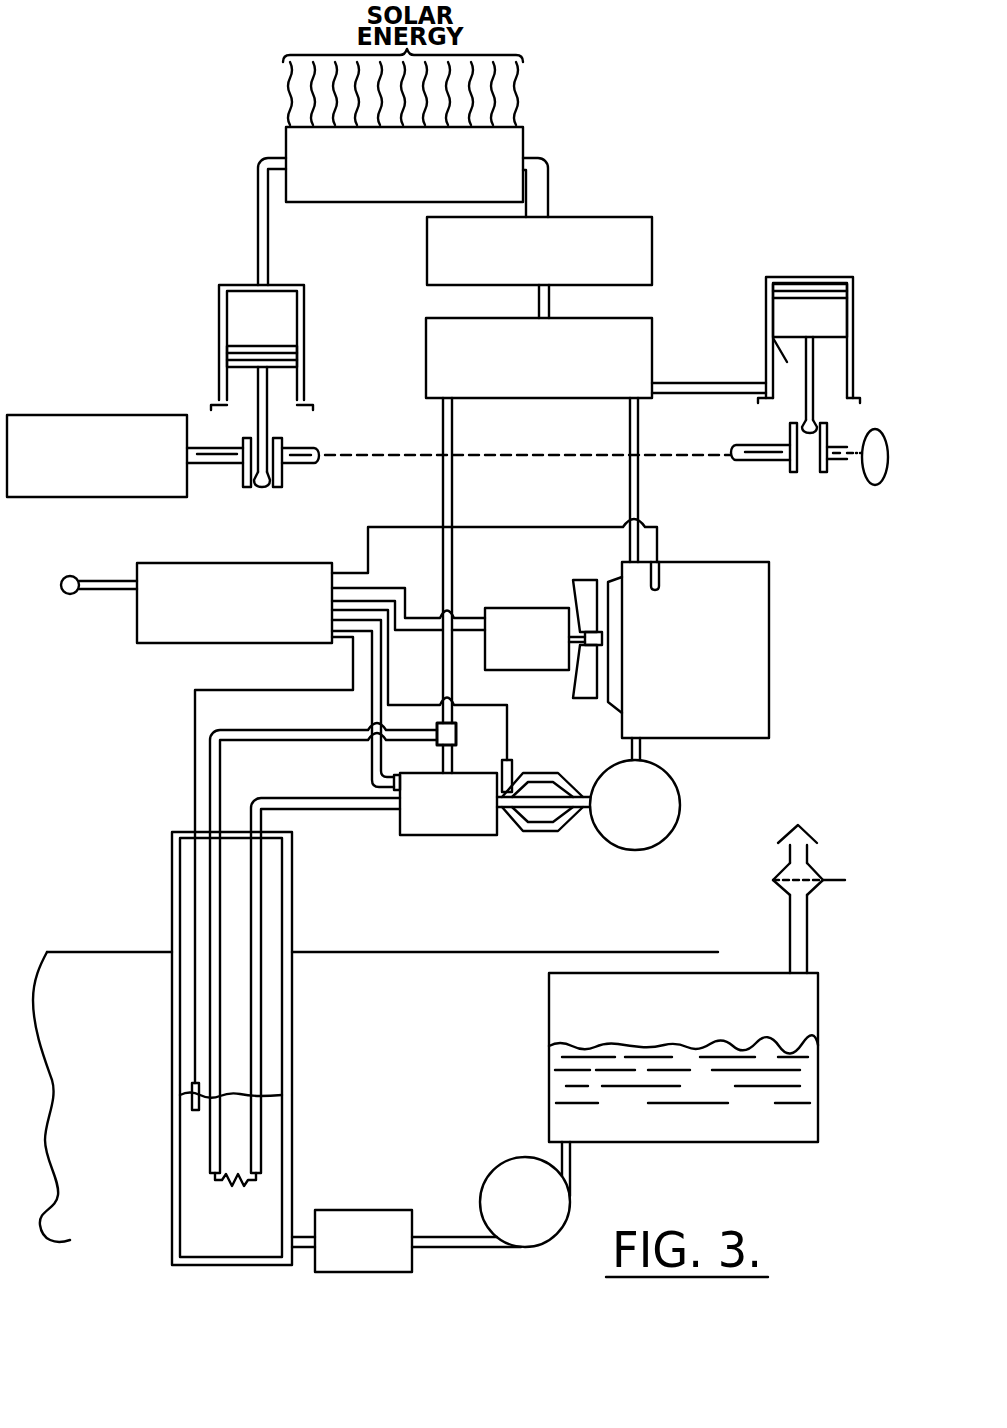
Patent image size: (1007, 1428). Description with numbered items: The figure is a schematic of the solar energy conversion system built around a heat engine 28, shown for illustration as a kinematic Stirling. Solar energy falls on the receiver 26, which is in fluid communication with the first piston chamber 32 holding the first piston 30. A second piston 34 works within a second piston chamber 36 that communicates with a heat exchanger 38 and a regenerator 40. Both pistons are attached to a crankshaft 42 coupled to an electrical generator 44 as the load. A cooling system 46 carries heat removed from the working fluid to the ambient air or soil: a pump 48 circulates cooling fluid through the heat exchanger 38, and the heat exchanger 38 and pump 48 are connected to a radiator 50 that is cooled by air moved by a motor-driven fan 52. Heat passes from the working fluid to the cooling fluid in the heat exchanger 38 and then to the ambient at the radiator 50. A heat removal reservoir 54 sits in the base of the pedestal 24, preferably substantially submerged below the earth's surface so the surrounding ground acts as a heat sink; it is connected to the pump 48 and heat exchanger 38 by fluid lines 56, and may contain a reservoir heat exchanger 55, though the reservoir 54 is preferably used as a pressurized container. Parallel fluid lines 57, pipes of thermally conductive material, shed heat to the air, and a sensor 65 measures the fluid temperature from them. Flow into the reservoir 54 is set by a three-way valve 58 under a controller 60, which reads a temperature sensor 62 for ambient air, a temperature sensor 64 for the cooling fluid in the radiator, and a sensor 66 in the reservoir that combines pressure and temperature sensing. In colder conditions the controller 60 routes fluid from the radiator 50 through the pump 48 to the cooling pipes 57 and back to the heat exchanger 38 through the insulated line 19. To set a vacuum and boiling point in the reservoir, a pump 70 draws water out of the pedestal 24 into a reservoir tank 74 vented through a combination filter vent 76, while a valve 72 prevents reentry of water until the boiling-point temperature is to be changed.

The line 19 is at (452, 475).
The pedestal 24 is at (292, 932).
The receiver 26 is at (391, 189).
The heat engine 28 is at (616, 189).
The first piston 30 is at (239, 380).
The first piston chamber 32 is at (248, 334).
The second piston 34 is at (799, 312).
The second piston chamber 36 is at (787, 362).
The heat exchanger 38 is at (526, 393).
The regenerator 40 is at (526, 278).
The crankshaft 42 is at (304, 467).
The electrical generator 44 is at (83, 484).
The cooling system 46 is at (559, 588).
The pump 48 is at (621, 833).
The radiator 50 is at (681, 678).
The motor-driven fan 52 is at (513, 661).
The heat removal reservoir 54 is at (223, 1248).
The reservoir heat exchanger 55 is at (250, 1192).
The fluid lines 56 is at (253, 810).
The parallel fluid lines 57 is at (537, 831).
The three-way valve 58 is at (434, 829).
The controller 60 is at (221, 630).
The temperature sensor 62 is at (74, 594).
The temperature sensor 64 is at (661, 576).
The sensor 65 is at (514, 762).
The sensor 66 is at (192, 1097).
The pump 70 is at (511, 1229).
The valve 72 is at (349, 1266).
The reservoir tank 74 is at (756, 1131).
The combination filter vent 76 is at (809, 889).